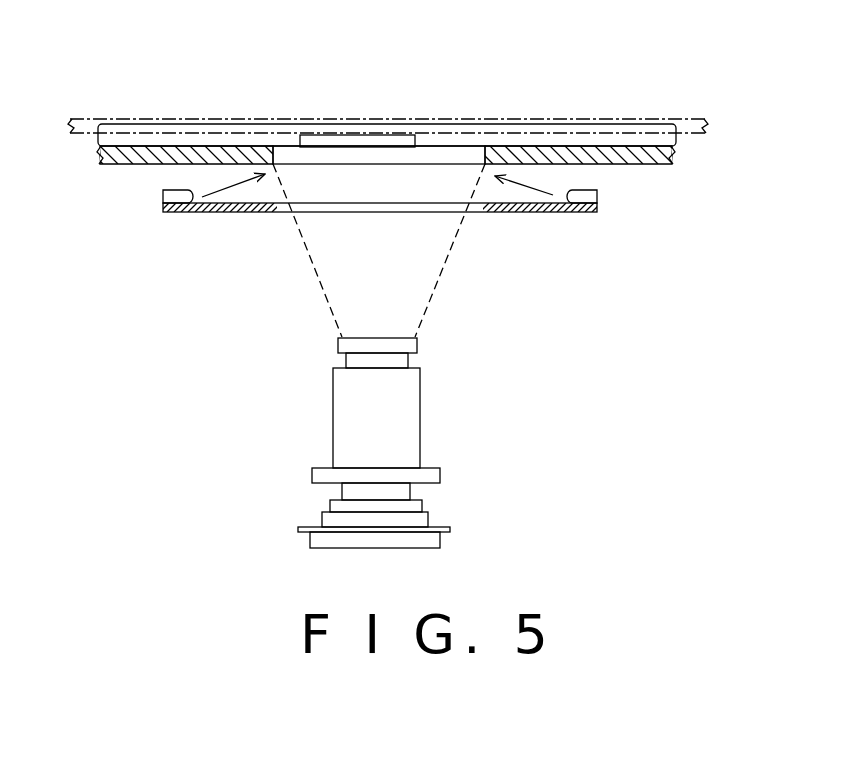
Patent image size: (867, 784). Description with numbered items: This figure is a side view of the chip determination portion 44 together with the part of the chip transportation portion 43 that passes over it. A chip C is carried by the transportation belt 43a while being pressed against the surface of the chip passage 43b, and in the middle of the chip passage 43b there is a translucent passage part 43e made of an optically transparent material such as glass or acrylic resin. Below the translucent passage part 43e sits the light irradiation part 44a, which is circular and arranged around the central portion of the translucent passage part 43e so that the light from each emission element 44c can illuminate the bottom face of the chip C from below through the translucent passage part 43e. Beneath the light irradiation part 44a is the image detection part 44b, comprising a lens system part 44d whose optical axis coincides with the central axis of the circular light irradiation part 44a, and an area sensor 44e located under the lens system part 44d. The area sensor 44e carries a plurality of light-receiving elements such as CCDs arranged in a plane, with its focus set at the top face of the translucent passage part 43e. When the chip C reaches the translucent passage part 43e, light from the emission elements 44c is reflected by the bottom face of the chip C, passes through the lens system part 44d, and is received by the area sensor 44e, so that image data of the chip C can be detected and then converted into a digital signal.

The chip transportation portion 43 is at (587, 110).
The transportation belt 43a is at (82, 125).
The chip passage 43b is at (190, 144).
The translucent passage part 43e is at (443, 153).
The chip C is at (338, 140).
The chip determination portion 44 is at (453, 333).
The light irradiation part 44a is at (542, 213).
The image detection part 44b is at (527, 410).
The emission element 44c is at (163, 193).
The lens system part 44d is at (408, 423).
The area sensor 44e is at (422, 517).